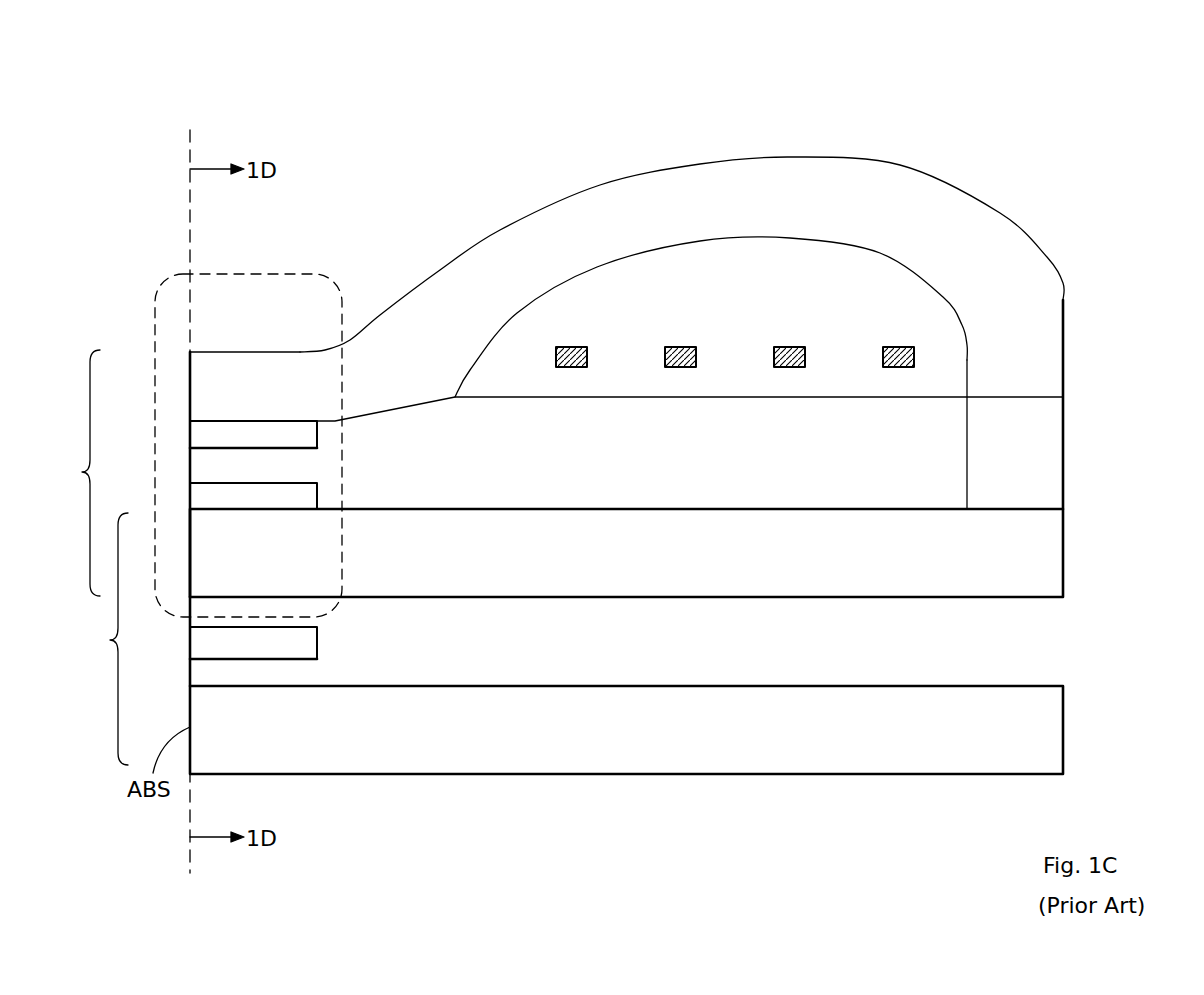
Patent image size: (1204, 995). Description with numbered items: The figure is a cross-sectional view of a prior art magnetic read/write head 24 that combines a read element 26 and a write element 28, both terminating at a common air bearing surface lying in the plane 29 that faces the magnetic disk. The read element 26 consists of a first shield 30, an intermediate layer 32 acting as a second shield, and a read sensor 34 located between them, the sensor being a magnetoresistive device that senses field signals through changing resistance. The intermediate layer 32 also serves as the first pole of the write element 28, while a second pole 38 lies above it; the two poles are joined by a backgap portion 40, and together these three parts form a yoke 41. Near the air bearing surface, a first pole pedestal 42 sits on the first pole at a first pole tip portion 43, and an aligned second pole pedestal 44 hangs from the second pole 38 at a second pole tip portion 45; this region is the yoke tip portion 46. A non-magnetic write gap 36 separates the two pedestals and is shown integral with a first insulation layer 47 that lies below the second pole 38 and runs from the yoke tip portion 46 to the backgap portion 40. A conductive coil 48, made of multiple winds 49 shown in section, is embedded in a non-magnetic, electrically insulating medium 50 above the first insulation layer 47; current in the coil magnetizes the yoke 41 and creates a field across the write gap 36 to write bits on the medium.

The magnetic read/write head 24 is at (809, 92).
The read element 26 is at (106, 639).
The write element 28 is at (78, 473).
The plane of the air bearing surface 29 is at (190, 152).
The first shield 30 is at (1052, 738).
The intermediate layer 32 is at (1052, 551).
The read sensor 34 is at (268, 654).
The write gap 36 is at (222, 463).
The second pole 38 is at (501, 315).
The backgap portion 40 is at (1052, 446).
The yoke 41 is at (1132, 360).
The first pole pedestal 42 is at (268, 506).
The first pole tip portion 43 is at (268, 569).
The second pole pedestal 44 is at (268, 445).
The second pole tip portion 45 is at (268, 397).
The yoke tip portion 46 is at (170, 288).
The first insulation layer 47 is at (673, 464).
The conductive coil 48 is at (942, 346).
The winds 49 is at (680, 345).
The non-magnetic and electrically insulating medium 50 is at (776, 302).